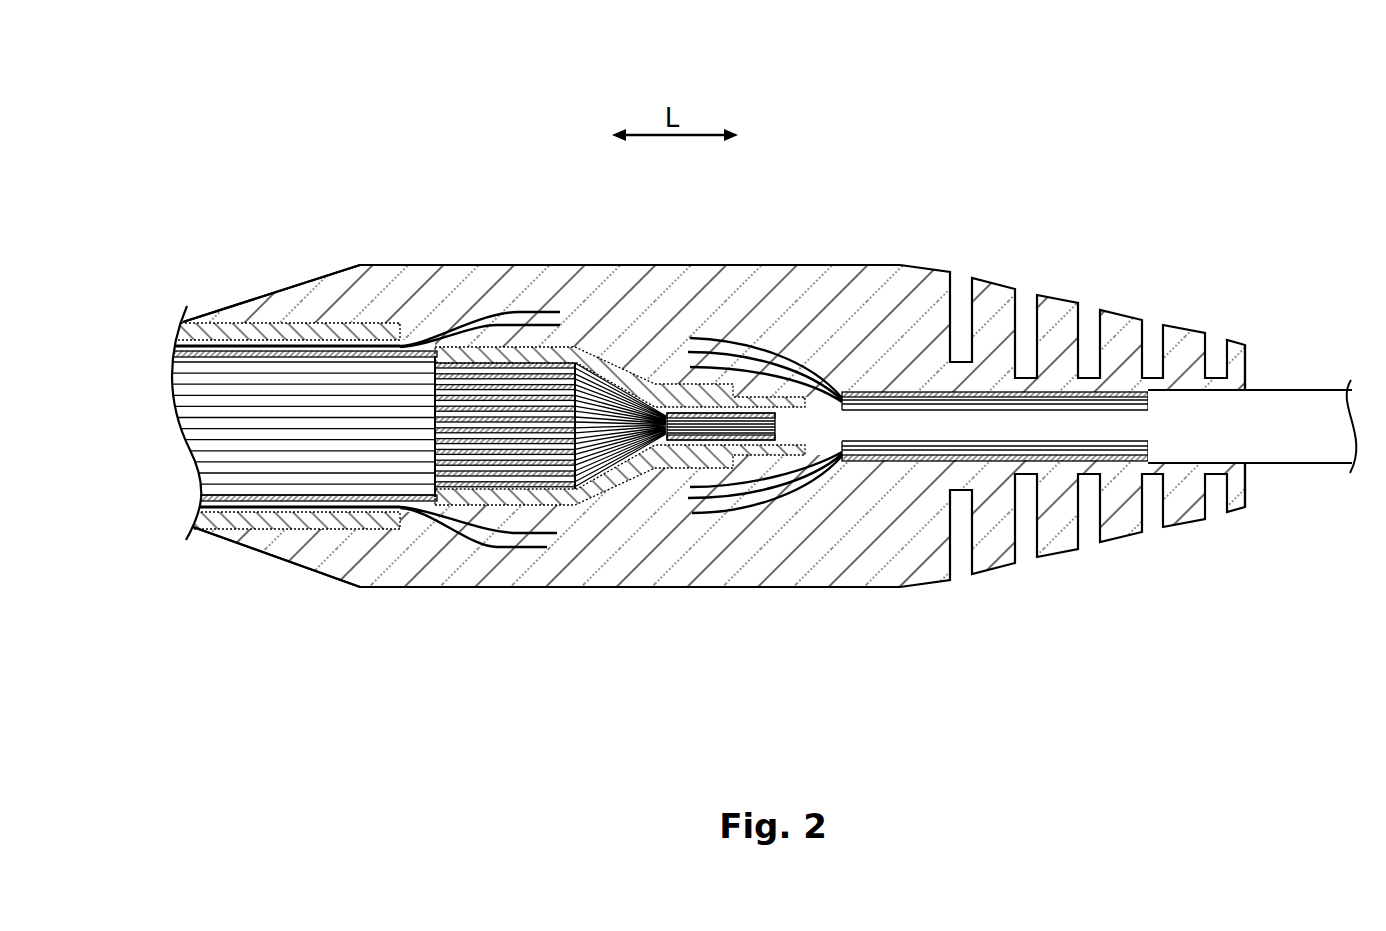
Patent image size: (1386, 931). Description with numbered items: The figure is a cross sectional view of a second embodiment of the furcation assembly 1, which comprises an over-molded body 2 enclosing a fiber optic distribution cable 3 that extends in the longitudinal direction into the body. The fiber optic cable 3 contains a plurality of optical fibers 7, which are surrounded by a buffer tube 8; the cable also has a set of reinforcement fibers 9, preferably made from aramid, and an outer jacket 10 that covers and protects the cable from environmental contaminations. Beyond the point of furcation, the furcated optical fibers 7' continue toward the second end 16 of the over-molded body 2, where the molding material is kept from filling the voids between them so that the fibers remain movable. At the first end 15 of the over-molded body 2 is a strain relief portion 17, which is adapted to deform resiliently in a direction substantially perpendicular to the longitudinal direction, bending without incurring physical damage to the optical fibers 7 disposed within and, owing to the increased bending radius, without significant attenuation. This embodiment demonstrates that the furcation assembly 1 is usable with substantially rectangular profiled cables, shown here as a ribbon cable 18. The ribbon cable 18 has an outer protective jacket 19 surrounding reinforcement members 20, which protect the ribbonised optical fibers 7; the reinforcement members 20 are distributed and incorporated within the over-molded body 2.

The furcation assembly 1 is at (201, 97).
The over-molded body 2 is at (903, 277).
The fiber optic distribution cable 3 is at (1317, 407).
The optical fibers 7 is at (470, 426).
The furcated optical fibers 7' is at (620, 350).
The buffer tube 8 is at (812, 427).
The reinforcement fibers 9 is at (710, 513).
The outer jacket 10 is at (1000, 392).
The first end 15 is at (1247, 368).
The second end 16 is at (258, 298).
The strain relief portion 17 is at (1245, 520).
The ribbon cable 18 is at (213, 520).
The outer protective jacket 19 is at (323, 330).
The reinforcement members 20 is at (518, 312).